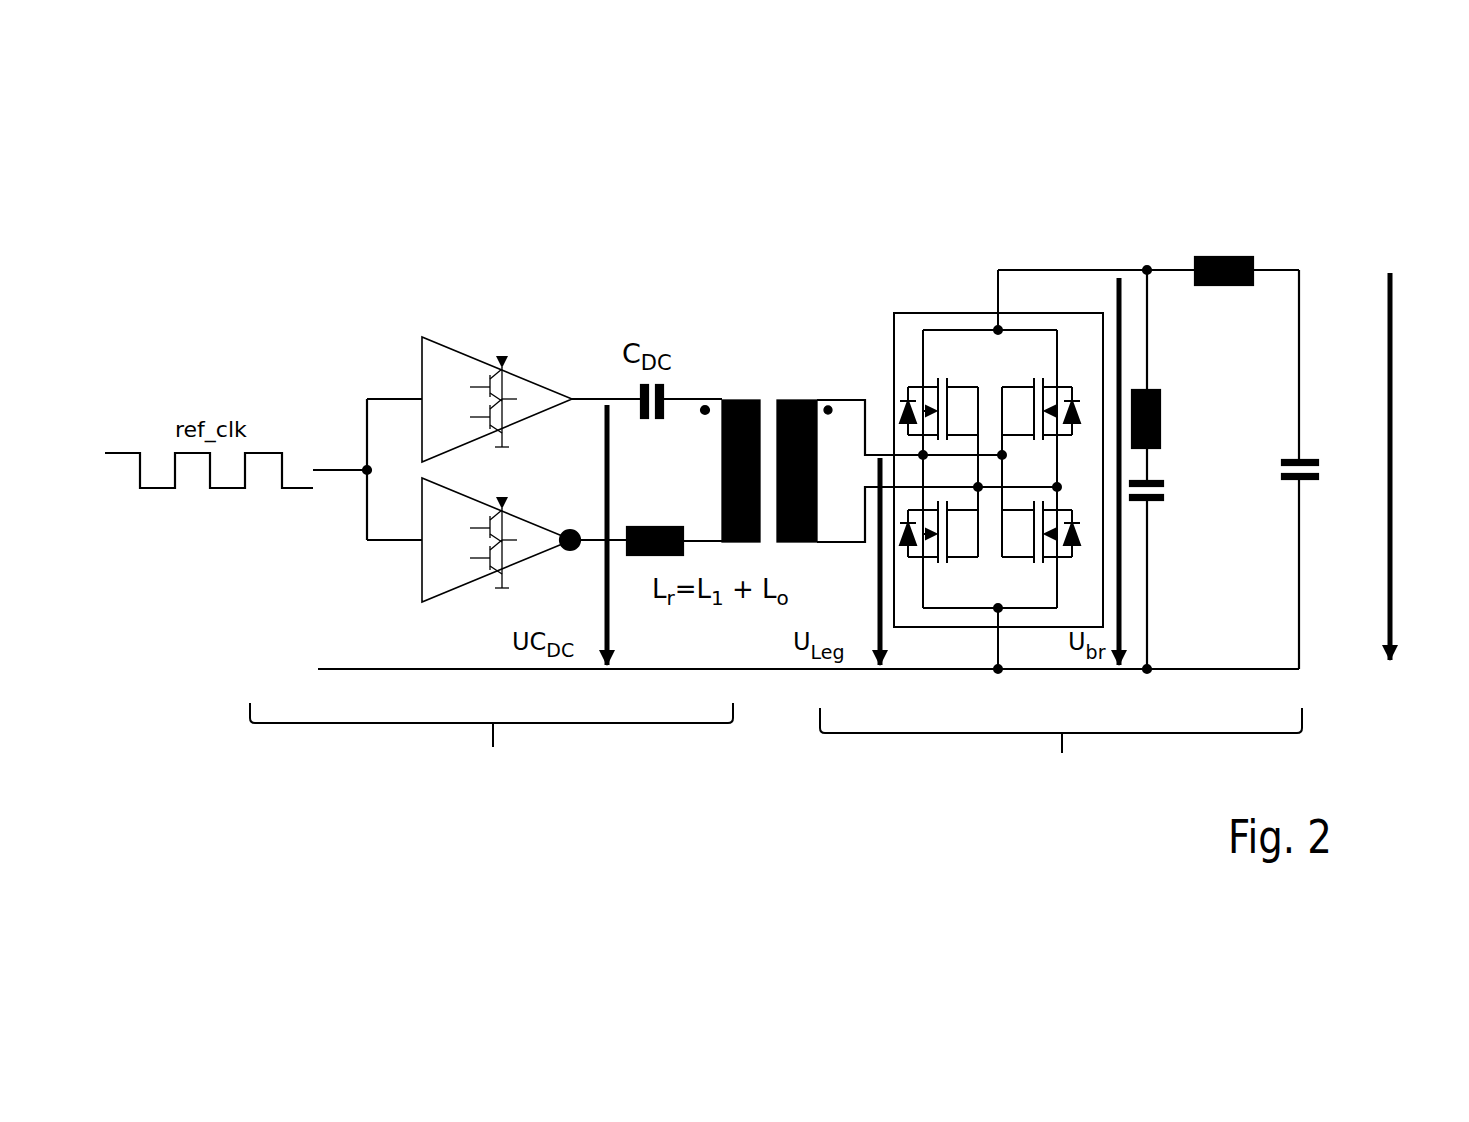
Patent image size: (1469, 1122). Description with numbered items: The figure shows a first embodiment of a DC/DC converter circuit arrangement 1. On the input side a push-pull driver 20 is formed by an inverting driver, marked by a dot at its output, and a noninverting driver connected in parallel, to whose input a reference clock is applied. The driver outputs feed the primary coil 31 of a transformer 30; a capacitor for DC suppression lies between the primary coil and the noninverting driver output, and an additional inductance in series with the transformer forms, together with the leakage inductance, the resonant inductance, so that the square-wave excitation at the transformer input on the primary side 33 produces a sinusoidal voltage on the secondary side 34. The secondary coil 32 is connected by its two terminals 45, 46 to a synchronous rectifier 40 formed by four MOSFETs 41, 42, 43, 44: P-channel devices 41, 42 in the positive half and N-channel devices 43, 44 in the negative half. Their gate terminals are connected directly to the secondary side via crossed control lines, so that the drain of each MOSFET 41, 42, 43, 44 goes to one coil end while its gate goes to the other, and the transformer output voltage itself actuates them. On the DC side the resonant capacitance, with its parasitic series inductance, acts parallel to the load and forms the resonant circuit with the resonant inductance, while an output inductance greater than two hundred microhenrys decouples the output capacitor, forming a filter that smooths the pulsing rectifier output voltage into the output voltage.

The resonant converter 1 is at (1347, 223).
The driver amplifiers 20 is at (513, 320).
The transformer 30 is at (772, 385).
The primary winding 31 is at (727, 382).
The secondary coil 32 is at (805, 382).
The primary side circuit 33 is at (491, 743).
The secondary side circuit 34 is at (1061, 745).
The bridge circuit 40 is at (999, 435).
The MOSFET 41 is at (948, 365).
The MOSFET 42 is at (1034, 362).
The MOSFET 43 is at (947, 582).
The MOSFET 44 is at (1043, 573).
The secondary winding terminal 45 is at (840, 535).
The secondary winding terminal 46 is at (856, 393).